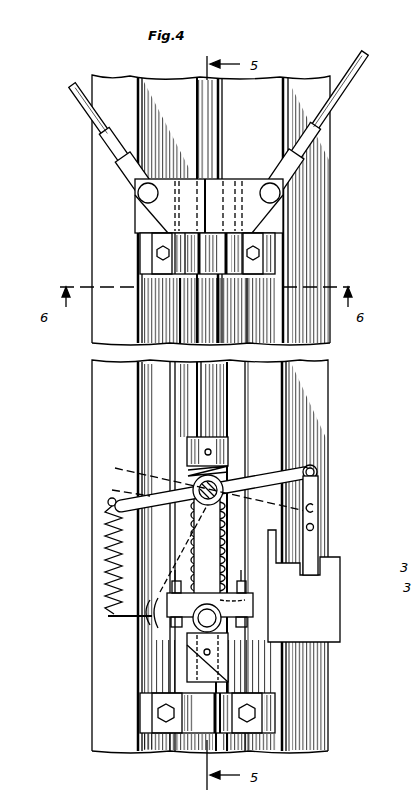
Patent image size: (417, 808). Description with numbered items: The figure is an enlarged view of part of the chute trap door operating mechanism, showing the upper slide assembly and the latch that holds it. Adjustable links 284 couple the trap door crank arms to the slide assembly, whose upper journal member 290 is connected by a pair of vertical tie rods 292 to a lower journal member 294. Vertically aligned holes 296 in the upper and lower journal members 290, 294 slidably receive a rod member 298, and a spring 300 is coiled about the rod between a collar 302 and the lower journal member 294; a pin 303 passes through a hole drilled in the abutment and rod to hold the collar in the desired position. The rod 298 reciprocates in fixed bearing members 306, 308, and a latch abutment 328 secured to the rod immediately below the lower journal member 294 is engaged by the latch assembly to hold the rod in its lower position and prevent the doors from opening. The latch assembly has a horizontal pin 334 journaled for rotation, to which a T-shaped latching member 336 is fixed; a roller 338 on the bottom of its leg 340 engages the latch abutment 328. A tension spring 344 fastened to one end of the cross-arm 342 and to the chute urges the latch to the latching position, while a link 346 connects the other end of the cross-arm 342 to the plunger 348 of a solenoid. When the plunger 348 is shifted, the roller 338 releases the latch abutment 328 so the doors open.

The adjustable links 284 is at (88, 108).
The upper journal member 290 is at (292, 205).
The vertical tie rods 292 is at (242, 393).
The lower journal member 294 is at (255, 602).
The vertically aligned holes 296 is at (228, 172).
The rod member 298 is at (221, 129).
The spring 300 is at (232, 560).
The collar 302 is at (188, 436).
The pin 303 is at (205, 452).
The fixed bearing member 306 is at (262, 248).
The fixed bearing member 308 is at (150, 702).
The latch abutment 328 is at (228, 660).
The horizontal pin 334 is at (240, 489).
The T-shaped latching member 336 is at (190, 610).
The roller 338 is at (192, 632).
The leg 340 is at (228, 606).
The cross-arm 342 is at (298, 465).
The tension spring 344 is at (105, 560).
The link 346 is at (314, 487).
The plunger 348 is at (313, 538).